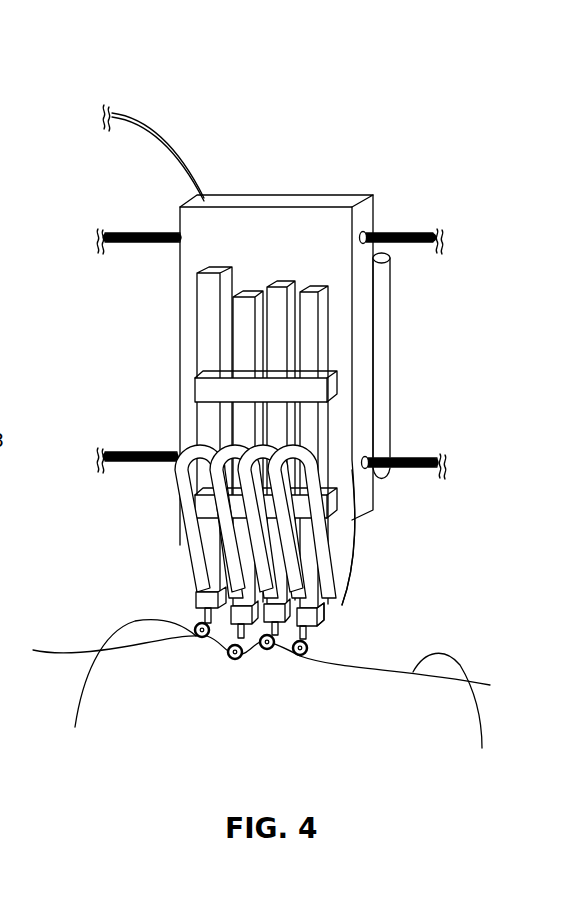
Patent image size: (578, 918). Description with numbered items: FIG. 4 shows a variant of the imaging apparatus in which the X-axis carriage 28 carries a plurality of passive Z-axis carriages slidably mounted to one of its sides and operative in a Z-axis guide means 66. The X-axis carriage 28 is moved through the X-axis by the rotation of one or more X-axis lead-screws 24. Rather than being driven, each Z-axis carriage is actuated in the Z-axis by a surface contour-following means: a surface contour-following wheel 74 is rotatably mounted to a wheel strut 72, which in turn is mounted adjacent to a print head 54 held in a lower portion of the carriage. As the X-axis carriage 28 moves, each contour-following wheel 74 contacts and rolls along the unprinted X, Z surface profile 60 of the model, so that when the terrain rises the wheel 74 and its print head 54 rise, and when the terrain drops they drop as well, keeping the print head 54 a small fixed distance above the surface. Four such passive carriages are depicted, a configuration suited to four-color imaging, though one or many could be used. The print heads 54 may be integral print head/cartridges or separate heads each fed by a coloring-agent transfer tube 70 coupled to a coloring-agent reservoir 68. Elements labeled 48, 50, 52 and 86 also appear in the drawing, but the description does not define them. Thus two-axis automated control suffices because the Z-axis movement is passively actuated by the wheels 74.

The X-axis lead-screw 24 is at (140, 233).
The X-axis carriage 28 is at (333, 200).
The support bar 48 is at (307, 420).
The strap loop 50 is at (188, 527).
The end block 52 is at (200, 602).
The print head 54 is at (323, 627).
The unprinted X, Z surface profile 60 is at (264, 694).
The Z-axis guide means 66 is at (330, 388).
The coloring-agent reservoir 68 is at (385, 357).
The coloring-agent transfer tube 70 is at (357, 570).
The wheel strut 72 is at (197, 617).
The surface contour-following wheel 74 is at (200, 637).
The rod 86 is at (130, 113).